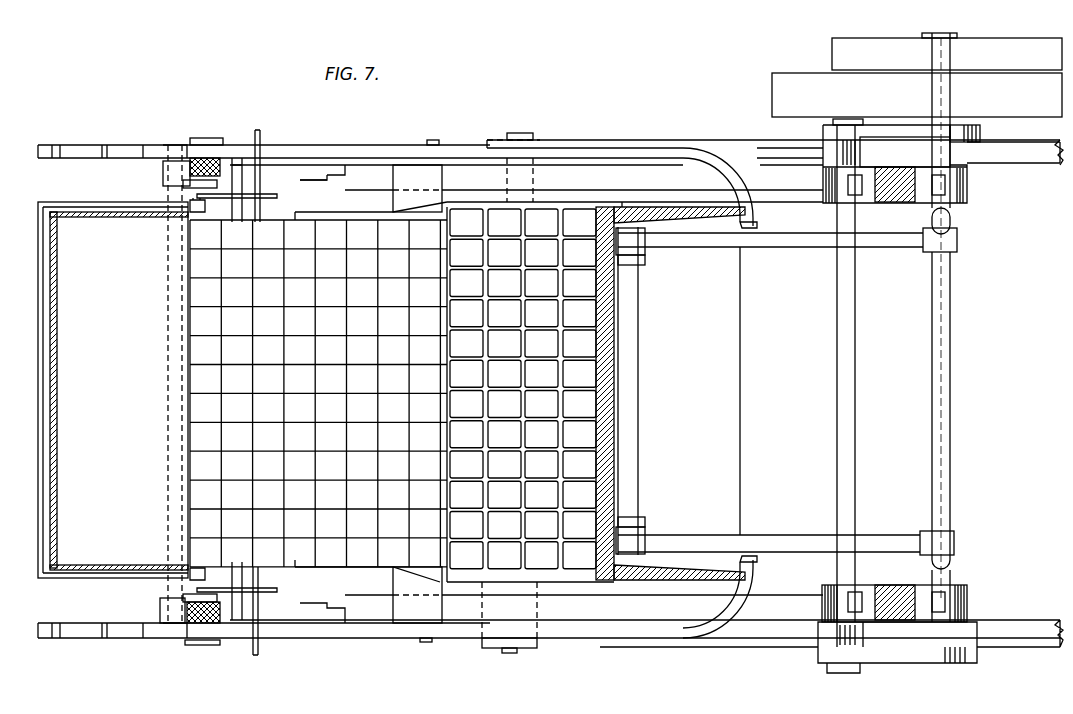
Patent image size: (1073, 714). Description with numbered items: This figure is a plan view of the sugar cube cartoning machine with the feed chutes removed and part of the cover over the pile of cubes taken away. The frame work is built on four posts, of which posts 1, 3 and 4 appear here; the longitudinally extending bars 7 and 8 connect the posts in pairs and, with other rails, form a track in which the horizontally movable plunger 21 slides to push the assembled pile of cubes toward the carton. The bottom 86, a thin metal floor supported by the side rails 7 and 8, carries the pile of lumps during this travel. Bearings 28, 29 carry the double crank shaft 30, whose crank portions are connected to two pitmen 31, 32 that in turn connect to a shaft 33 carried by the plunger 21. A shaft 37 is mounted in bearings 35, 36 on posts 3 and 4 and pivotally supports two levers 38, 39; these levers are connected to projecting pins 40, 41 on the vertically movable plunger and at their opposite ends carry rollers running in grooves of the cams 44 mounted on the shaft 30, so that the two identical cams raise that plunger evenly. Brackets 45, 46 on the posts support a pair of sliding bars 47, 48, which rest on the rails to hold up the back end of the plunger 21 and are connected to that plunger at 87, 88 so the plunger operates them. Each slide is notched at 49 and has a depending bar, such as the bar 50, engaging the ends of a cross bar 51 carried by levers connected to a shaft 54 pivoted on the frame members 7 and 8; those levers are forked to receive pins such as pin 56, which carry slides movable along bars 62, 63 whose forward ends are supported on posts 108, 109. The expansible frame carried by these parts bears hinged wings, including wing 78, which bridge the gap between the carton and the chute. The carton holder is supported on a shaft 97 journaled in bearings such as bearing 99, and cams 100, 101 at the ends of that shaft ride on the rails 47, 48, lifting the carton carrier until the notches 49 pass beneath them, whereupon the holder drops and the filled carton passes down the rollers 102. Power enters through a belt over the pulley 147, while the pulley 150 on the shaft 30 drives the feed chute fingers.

The post 1 is at (203, 158).
The post 3 is at (885, 203).
The post 4 is at (885, 585).
The longitudinally extending bar 7 is at (758, 598).
The longitudinally extending bar 8 is at (770, 168).
The plunger 21 is at (740, 430).
The bearing 28 is at (967, 200).
The bearing 29 is at (967, 600).
The double crank shaft 30 is at (950, 355).
The pitman 31 is at (910, 247).
The pitman 32 is at (815, 532).
The shaft 33 is at (638, 345).
The bearing 35 is at (830, 203).
The bearing 36 is at (820, 598).
The shaft 37 is at (855, 358).
The lever 38 is at (737, 140).
The lever 39 is at (768, 652).
The projecting pin 40 is at (520, 655).
The projecting pin 41 is at (520, 130).
The cam 44 is at (1020, 168).
The bracket 45 is at (214, 138).
The bracket 46 is at (200, 645).
The sliding bar 47 is at (335, 152).
The sliding bar 48 is at (352, 642).
The notch 49 is at (78, 142).
The depending bar 50 is at (440, 141).
The cross bar 51 is at (262, 128).
The shaft 54 is at (245, 575).
The pin 56 is at (262, 583).
The bar 62 is at (285, 190).
The bar 63 is at (330, 590).
The wing 78 is at (163, 180).
The bottom 86 is at (412, 168).
The connection 87 is at (757, 210).
The connection 88 is at (740, 570).
The shaft 97 is at (165, 195).
The bearing 99 is at (168, 604).
The cam 100 is at (158, 142).
The cam 101 is at (150, 638).
The rollers 102 is at (38, 397).
The post 108 is at (355, 190).
The post 109 is at (360, 590).
The pulley 147 is at (772, 81).
The pulley 150 is at (832, 44).